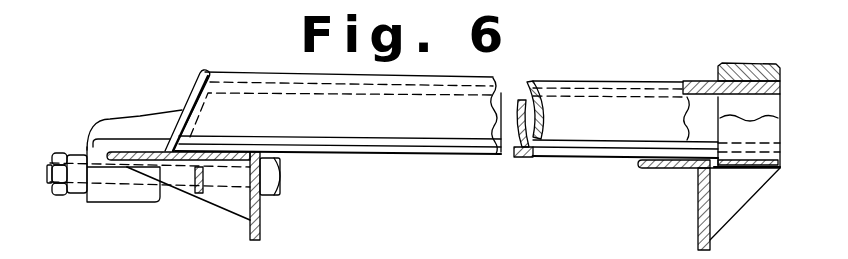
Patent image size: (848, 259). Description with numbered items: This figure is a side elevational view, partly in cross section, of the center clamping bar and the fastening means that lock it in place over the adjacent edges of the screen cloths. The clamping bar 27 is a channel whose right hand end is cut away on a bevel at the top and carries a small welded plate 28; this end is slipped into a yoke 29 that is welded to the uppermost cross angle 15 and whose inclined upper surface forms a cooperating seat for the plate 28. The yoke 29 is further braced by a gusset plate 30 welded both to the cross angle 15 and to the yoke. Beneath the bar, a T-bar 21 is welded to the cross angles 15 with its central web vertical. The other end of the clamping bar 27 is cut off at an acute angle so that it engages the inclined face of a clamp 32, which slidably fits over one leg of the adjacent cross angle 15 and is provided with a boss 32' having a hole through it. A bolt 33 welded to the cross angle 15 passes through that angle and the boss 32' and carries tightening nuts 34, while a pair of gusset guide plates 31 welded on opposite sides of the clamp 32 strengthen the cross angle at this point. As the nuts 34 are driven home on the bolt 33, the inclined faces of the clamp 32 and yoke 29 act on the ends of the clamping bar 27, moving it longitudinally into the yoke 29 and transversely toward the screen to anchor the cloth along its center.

The cross angle 15 is at (260, 228).
The T-bar 21 is at (513, 157).
The clamping bar 27 is at (493, 80).
The plate 28 is at (778, 91).
The yoke 29 is at (752, 71).
The gusset plate 30 is at (738, 200).
The gusset guide plate 31 is at (227, 200).
The clamp 32 is at (148, 110).
The boss 32' is at (150, 194).
The bolt 33 is at (270, 182).
The tightening nut 34 is at (77, 193).